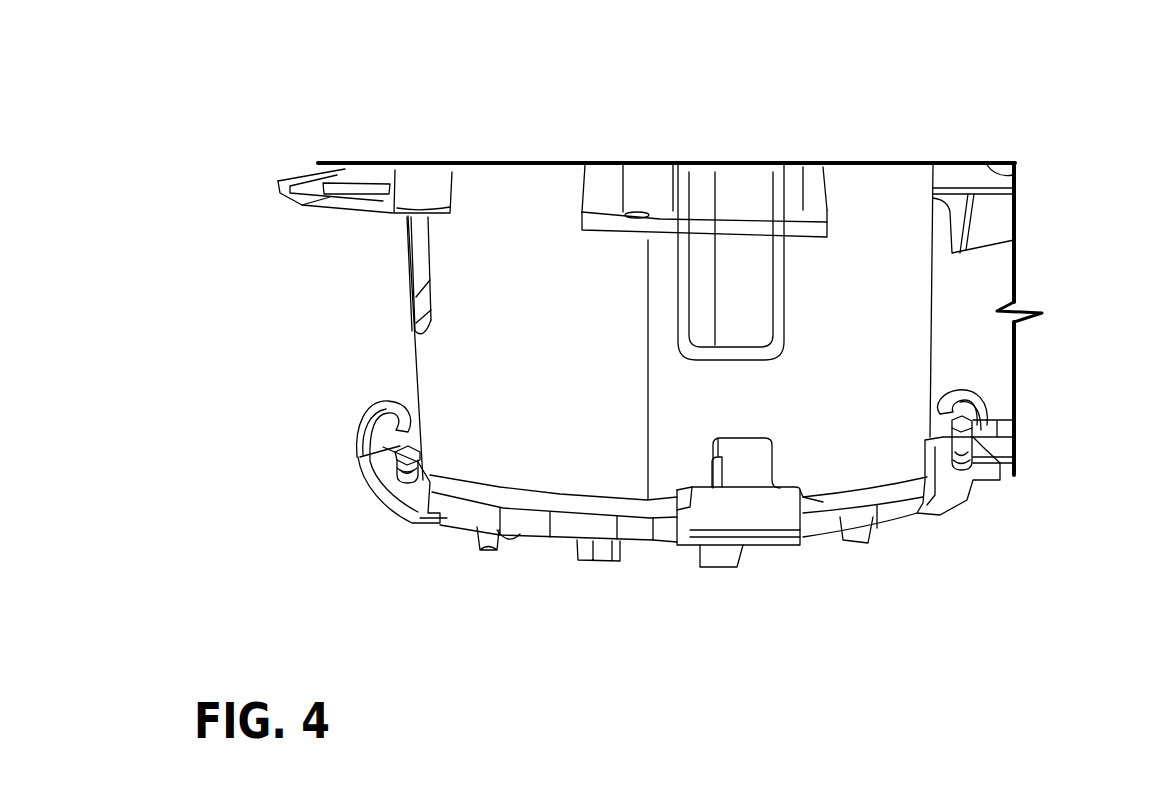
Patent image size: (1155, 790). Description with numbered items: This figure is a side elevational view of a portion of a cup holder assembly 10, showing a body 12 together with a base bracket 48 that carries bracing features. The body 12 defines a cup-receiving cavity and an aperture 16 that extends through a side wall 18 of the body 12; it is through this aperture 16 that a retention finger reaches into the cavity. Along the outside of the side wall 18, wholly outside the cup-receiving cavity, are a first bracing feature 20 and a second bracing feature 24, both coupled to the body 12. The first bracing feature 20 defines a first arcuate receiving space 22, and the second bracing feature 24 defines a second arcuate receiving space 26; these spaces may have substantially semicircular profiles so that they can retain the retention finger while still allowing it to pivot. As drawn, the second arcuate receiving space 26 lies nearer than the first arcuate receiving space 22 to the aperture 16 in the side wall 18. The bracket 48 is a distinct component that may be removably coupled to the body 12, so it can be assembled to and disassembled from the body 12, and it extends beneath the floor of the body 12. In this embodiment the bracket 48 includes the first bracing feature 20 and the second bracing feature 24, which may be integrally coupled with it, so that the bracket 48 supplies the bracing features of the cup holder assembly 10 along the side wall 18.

The cup holder assembly 10 is at (658, 107).
The body 12 is at (547, 228).
The aperture 16 is at (745, 198).
The side wall 18 is at (497, 233).
The first bracing feature 20 is at (413, 493).
The first arcuate receiving space 22 is at (391, 468).
The second bracing feature 24 is at (393, 417).
The second arcuate receiving space 26 is at (387, 440).
The bracket 48 is at (530, 537).